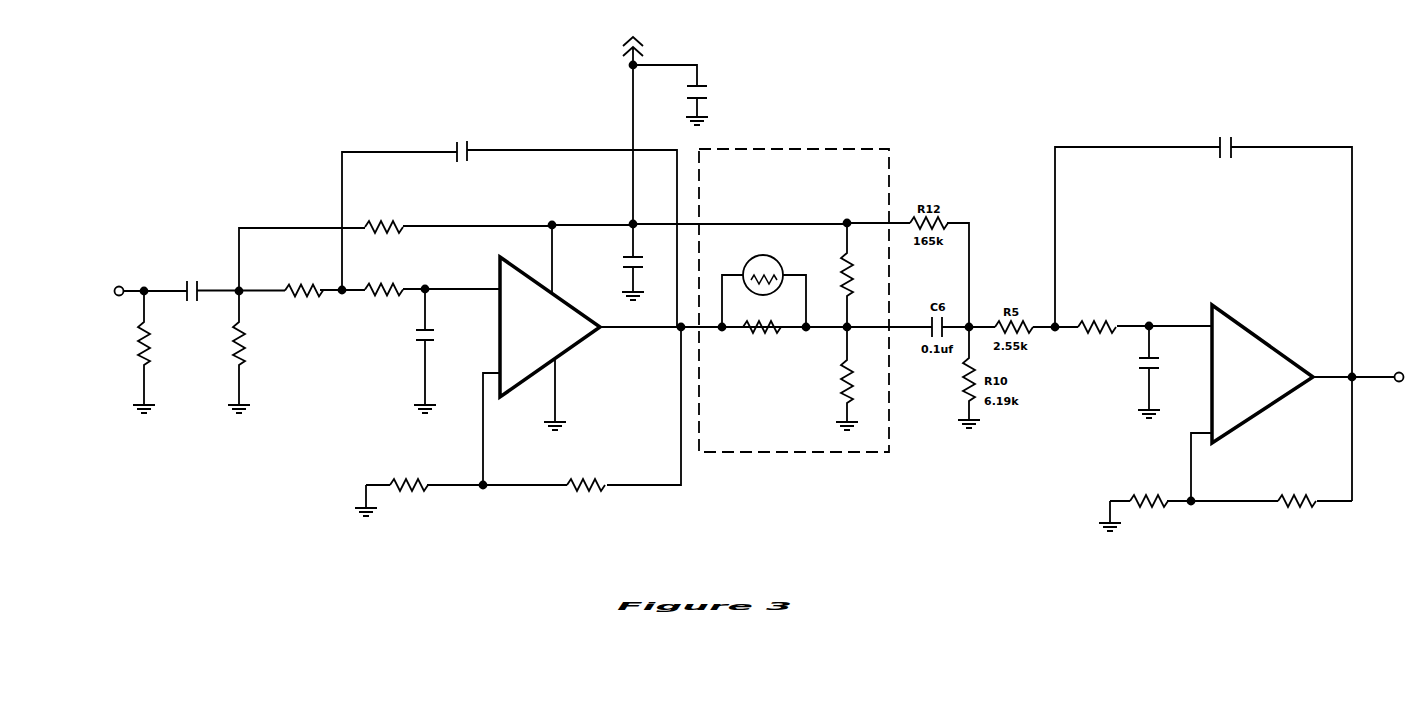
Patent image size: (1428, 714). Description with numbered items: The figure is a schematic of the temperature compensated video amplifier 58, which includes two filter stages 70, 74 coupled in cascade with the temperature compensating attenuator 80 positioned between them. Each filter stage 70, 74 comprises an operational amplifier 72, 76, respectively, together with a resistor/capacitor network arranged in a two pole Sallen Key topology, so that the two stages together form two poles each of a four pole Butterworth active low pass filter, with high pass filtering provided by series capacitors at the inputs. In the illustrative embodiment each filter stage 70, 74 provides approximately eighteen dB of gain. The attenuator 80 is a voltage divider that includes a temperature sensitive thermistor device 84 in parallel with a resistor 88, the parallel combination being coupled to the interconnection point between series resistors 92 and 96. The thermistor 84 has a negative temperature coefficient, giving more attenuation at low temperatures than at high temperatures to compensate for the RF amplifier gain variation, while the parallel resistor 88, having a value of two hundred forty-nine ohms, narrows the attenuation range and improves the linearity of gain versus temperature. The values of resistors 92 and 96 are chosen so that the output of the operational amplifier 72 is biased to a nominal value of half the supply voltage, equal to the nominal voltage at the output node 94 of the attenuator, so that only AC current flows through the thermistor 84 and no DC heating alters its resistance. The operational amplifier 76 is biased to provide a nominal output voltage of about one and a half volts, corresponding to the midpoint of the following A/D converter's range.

The temperature compensated video amplifier 58 is at (1023, 115).
The first filter stage 70 is at (297, 195).
The operational amplifier 72 is at (571, 307).
The second filter stage 74 is at (1287, 132).
The operational amplifier 76 is at (1258, 336).
The temperature compensating attenuator 80 is at (893, 432).
The thermistor 84 is at (752, 259).
The resistor 88 is at (779, 336).
The series resistor 92 is at (842, 273).
The output node 94 is at (845, 325).
The series resistor 96 is at (852, 382).